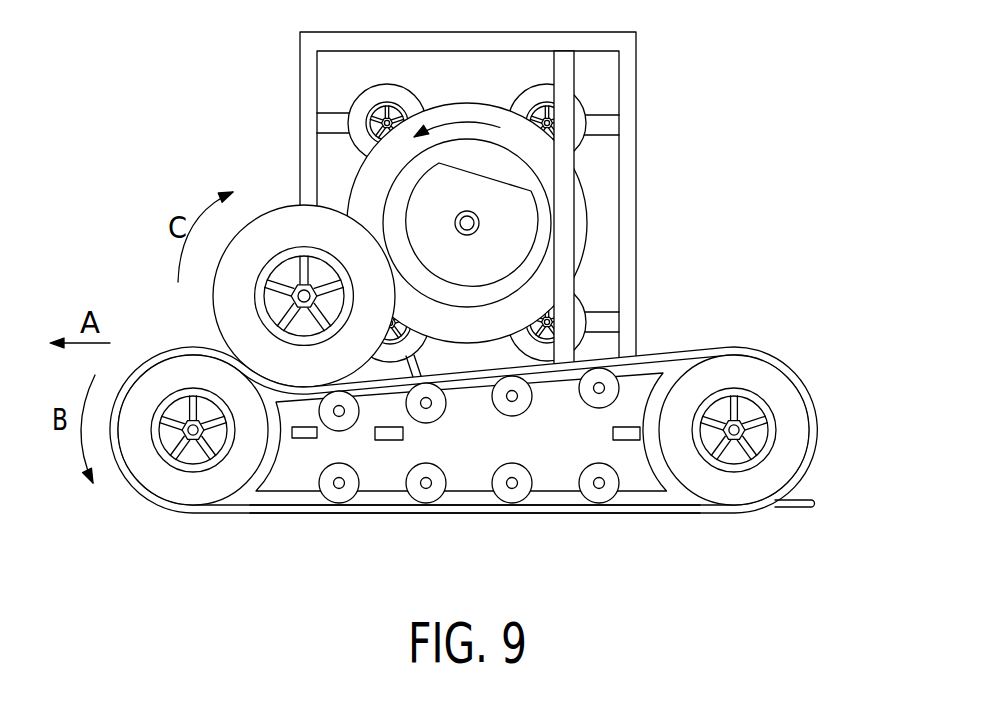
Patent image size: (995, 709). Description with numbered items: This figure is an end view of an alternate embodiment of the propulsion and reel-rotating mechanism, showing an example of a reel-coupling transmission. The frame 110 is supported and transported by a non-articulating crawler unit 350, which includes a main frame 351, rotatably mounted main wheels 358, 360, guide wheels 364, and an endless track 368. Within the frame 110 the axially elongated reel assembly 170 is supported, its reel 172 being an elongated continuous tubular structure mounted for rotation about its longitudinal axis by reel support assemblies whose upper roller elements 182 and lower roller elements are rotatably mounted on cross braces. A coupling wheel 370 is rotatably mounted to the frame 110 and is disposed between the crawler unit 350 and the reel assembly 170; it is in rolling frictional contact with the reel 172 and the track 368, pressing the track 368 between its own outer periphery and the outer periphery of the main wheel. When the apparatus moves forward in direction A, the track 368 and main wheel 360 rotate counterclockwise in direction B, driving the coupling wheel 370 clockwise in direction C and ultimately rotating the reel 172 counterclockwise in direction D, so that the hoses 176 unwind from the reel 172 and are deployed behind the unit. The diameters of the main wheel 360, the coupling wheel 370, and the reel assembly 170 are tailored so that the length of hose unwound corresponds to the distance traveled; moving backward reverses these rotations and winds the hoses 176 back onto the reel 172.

The frame 110 is at (645, 70).
The upper roller elements 182 is at (366, 107).
The reel assembly 170 is at (474, 223).
The reel 172 is at (388, 193).
The coupling wheel 370 is at (210, 315).
The crawler unit 350 is at (780, 356).
The endless track 368 is at (240, 512).
The main frame 351 is at (470, 473).
The guide wheels 364 is at (618, 490).
The main wheel 360 is at (230, 498).
The main wheel 358 is at (680, 492).
The flexible tubes 176 is at (813, 507).